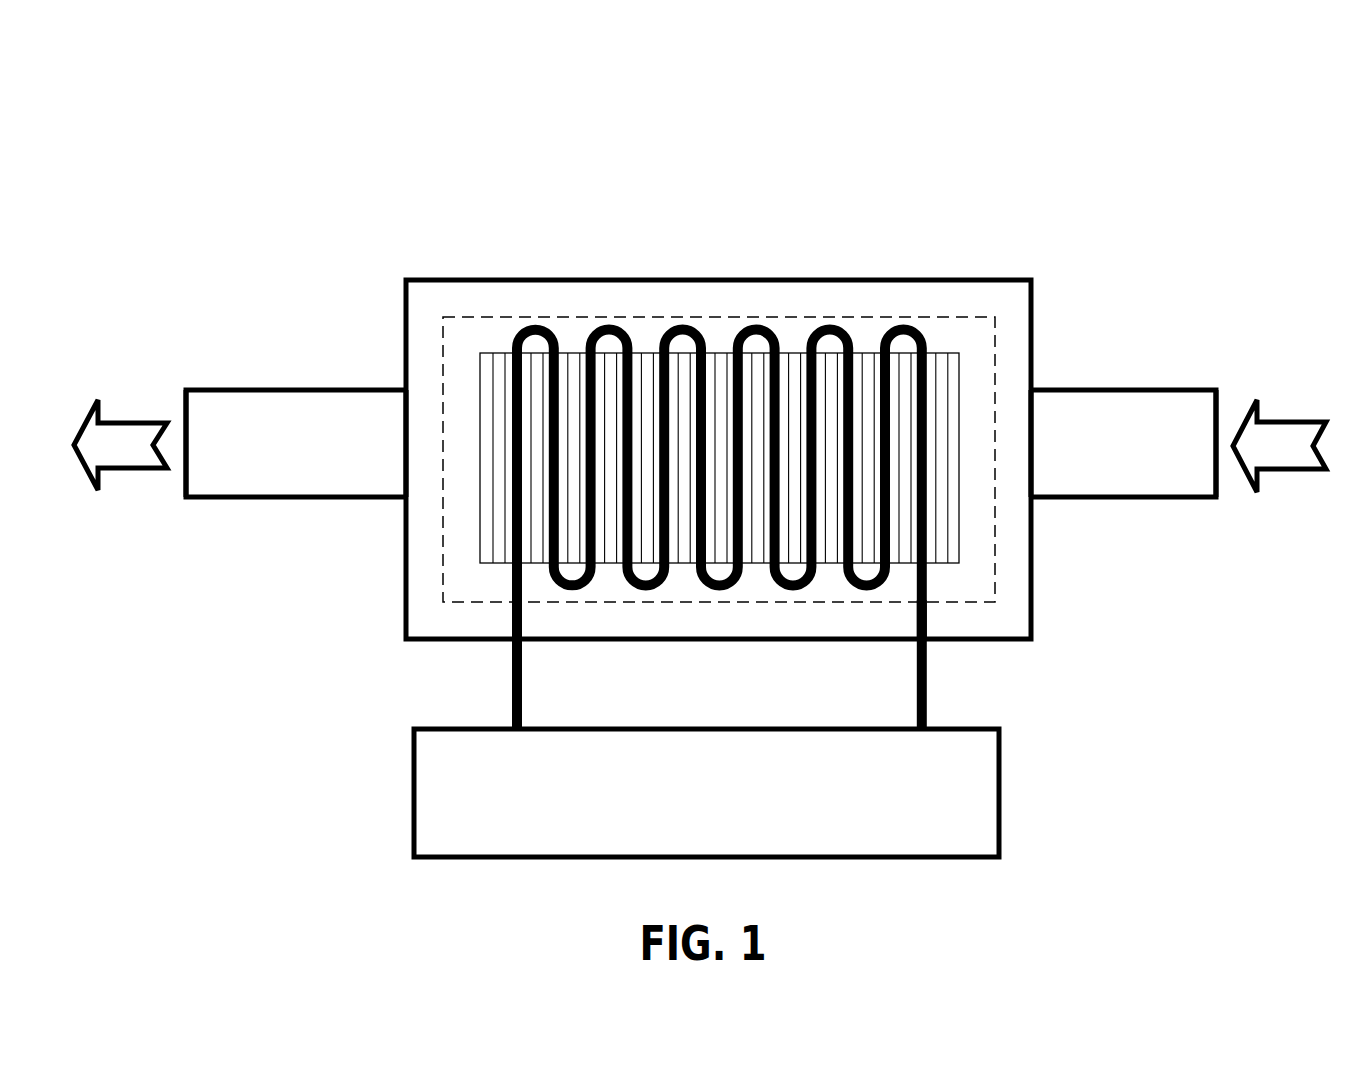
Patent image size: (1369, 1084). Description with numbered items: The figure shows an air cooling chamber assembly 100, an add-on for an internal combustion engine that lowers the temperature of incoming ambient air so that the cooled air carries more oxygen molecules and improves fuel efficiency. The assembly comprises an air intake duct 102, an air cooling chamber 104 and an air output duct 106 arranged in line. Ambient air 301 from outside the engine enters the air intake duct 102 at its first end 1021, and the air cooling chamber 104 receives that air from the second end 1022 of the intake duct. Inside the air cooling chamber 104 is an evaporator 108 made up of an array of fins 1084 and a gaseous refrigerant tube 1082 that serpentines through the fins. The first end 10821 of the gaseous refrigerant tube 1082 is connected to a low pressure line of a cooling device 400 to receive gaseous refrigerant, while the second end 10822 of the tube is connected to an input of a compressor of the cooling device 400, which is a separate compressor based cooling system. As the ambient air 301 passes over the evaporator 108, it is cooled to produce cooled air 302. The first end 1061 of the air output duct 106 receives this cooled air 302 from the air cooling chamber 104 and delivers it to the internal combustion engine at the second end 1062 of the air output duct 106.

The air cooling chamber assembly 100 is at (360, 132).
The air intake duct 102 is at (1125, 387).
The first end of the air intake duct 1021 is at (1215, 387).
The second end of the air intake duct 1022 is at (1033, 387).
The air cooling chamber 104 is at (1033, 278).
The air output duct 106 is at (305, 387).
The first end of the air output duct 1061 is at (400, 387).
The second end of the air output duct 1062 is at (223, 387).
The evaporator 108 is at (480, 315).
The gaseous refrigerant tube 1082 is at (903, 325).
The first end of the gaseous refrigerant tube 10821 is at (927, 682).
The second end of the gaseous refrigerant tube 10822 is at (512, 682).
The array of fins 1084 is at (959, 352).
The ambient air 301 is at (1273, 422).
The cooled air 302 is at (117, 420).
The cooling device 400 is at (1002, 794).